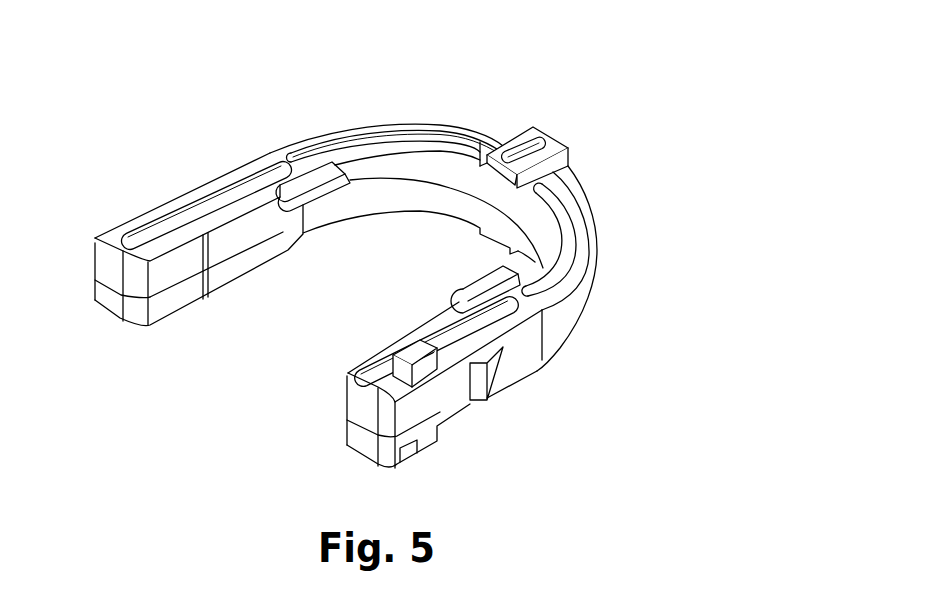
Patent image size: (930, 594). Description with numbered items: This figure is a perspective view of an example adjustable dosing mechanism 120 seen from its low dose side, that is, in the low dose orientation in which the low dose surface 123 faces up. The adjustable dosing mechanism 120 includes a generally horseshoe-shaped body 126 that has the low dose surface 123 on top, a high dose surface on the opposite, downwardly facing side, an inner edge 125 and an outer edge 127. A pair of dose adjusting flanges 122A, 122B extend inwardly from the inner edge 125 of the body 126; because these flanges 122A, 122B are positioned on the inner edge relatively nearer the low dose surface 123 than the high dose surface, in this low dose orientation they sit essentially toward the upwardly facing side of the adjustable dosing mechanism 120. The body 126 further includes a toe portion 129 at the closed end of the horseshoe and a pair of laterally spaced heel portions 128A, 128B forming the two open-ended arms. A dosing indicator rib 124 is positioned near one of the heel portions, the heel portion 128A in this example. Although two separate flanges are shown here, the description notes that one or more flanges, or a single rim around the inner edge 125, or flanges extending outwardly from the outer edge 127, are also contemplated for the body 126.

The adjustable dosing mechanism 120 is at (367, 274).
The dose adjusting flange 122A is at (526, 246).
The dose adjusting flange 122B is at (313, 153).
The low dose surface 123 is at (369, 118).
The dosing indicator rib 124 is at (425, 367).
The inner edge 125 is at (190, 302).
The body 126 is at (581, 200).
The outer edge 127 is at (572, 310).
The heel portion 128A is at (507, 400).
The heel portion 128B is at (191, 254).
The toe portion 129 is at (562, 125).